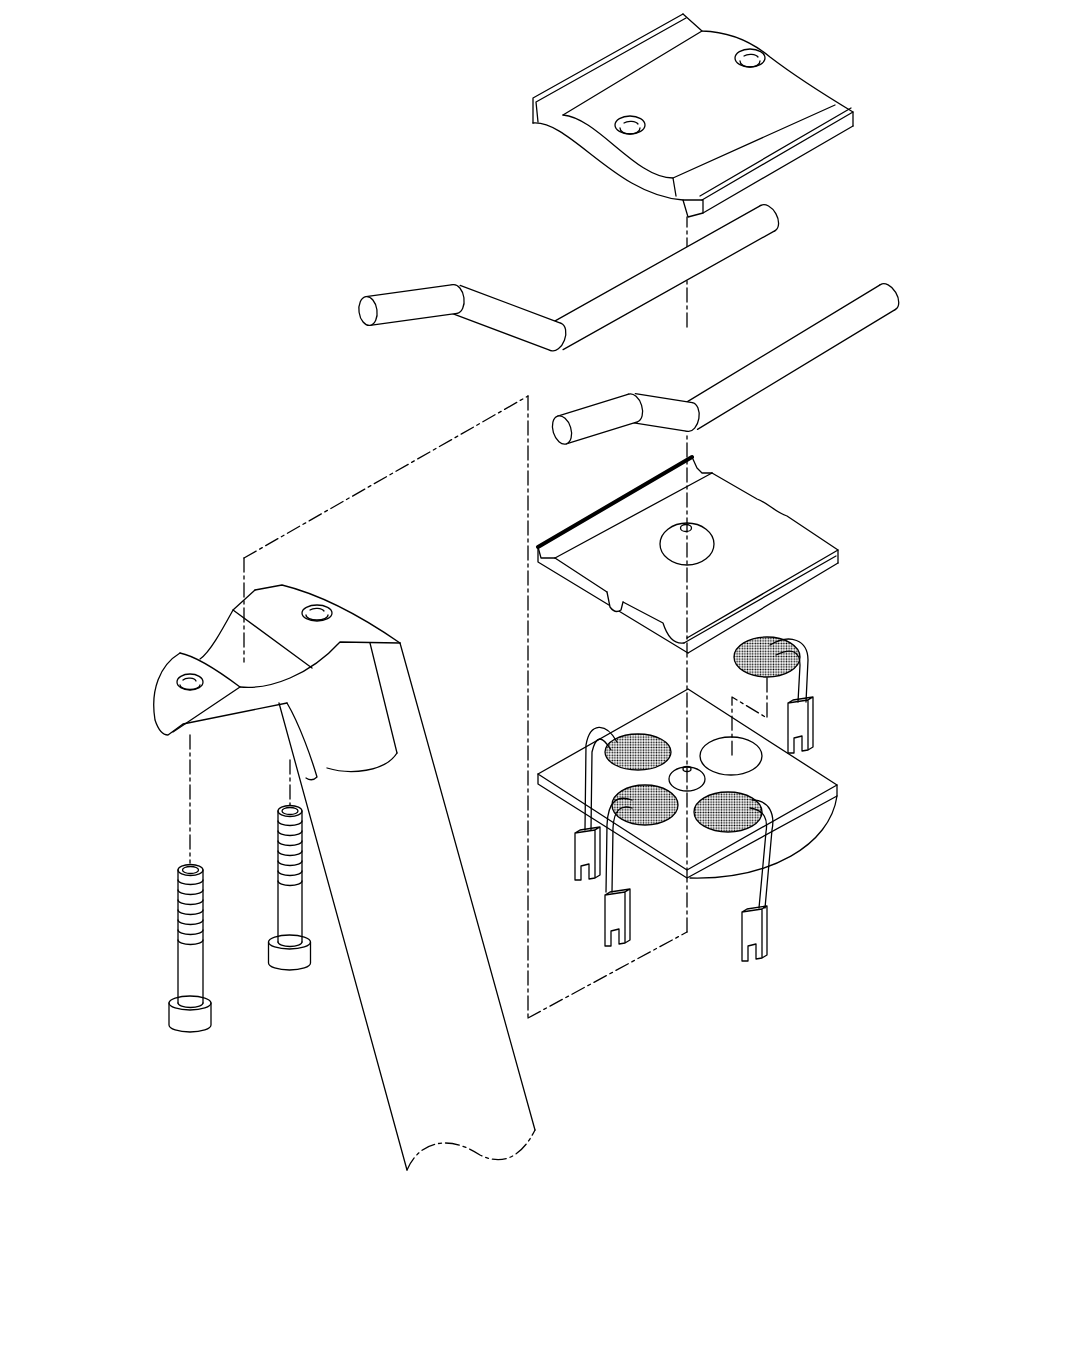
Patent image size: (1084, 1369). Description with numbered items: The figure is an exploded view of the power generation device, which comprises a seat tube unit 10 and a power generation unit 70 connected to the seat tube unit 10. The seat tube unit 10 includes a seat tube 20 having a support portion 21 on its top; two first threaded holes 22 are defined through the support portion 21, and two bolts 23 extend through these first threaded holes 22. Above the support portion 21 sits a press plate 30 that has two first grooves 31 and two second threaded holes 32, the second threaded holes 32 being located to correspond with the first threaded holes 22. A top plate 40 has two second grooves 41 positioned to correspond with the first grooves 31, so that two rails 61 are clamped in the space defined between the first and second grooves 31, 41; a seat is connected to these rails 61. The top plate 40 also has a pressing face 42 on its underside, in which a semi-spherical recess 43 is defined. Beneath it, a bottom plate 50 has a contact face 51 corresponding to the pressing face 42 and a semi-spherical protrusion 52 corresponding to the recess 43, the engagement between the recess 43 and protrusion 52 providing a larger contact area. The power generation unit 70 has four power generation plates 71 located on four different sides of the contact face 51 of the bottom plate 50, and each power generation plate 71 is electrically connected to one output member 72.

The seat tube unit 10 is at (277, 237).
The seat tube 20 is at (388, 1055).
The support portion 21 is at (222, 660).
The first threaded holes 22 is at (188, 677).
The bolts 23 is at (180, 1020).
The press plate 30 is at (668, 150).
The first grooves 31 is at (680, 205).
The second threaded holes 32 is at (600, 132).
The top plate 40 is at (802, 520).
The second grooves 41 is at (537, 553).
The pressing face 42 is at (578, 590).
The recess 43 is at (698, 540).
The bottom plate 50 is at (822, 767).
The contact face 51 is at (790, 785).
The protrusion 52 is at (585, 804).
The rails 61 is at (766, 218).
The power generation unit 70 is at (818, 643).
The power generation plate 71 is at (760, 805).
The output member 72 is at (630, 930).